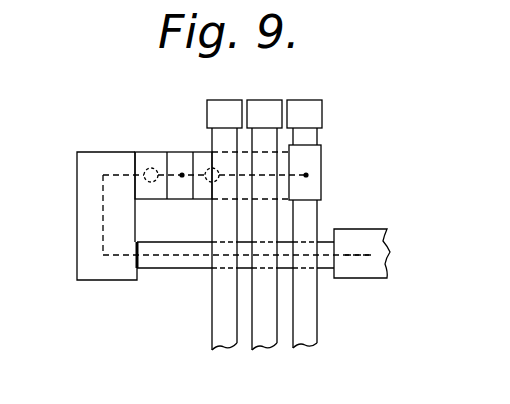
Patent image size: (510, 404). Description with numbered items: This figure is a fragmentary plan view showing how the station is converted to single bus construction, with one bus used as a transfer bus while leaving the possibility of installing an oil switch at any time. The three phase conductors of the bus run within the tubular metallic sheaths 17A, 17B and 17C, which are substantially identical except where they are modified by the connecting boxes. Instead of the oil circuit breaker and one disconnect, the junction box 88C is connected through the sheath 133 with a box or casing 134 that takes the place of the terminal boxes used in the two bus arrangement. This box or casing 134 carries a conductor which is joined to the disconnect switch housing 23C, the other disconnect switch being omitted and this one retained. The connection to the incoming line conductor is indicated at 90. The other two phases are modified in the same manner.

The box or casing 134 is at (77, 233).
The disconnect switch housing 23C is at (153, 150).
The tubular metallic sheath 17A is at (214, 346).
The tubular metallic sheath 17B is at (270, 345).
The tubular metallic sheath 17C is at (320, 346).
The sheath 133 is at (175, 262).
The junction box 88C is at (362, 229).
The connection point 90 is at (373, 253).